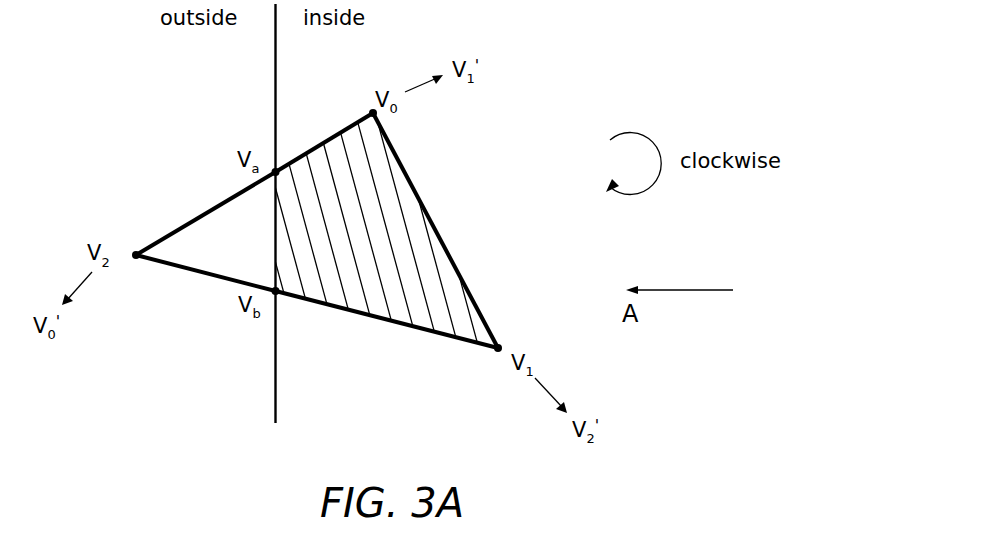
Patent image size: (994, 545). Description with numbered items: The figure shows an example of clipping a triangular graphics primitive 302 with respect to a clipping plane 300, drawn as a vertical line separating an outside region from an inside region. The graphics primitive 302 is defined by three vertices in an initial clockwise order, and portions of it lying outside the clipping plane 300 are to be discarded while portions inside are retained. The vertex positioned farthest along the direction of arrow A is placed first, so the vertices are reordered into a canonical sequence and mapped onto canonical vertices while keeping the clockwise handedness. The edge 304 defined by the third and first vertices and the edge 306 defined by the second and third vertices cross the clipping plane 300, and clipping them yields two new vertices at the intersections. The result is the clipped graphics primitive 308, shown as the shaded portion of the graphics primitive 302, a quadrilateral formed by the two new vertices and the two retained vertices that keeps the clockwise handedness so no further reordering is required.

The clipping plane 300 is at (333, 222).
The graphics primitive 302 is at (202, 245).
The edge 304 is at (352, 125).
The edge 306 is at (387, 336).
The clipped graphics primitive 308 is at (393, 230).